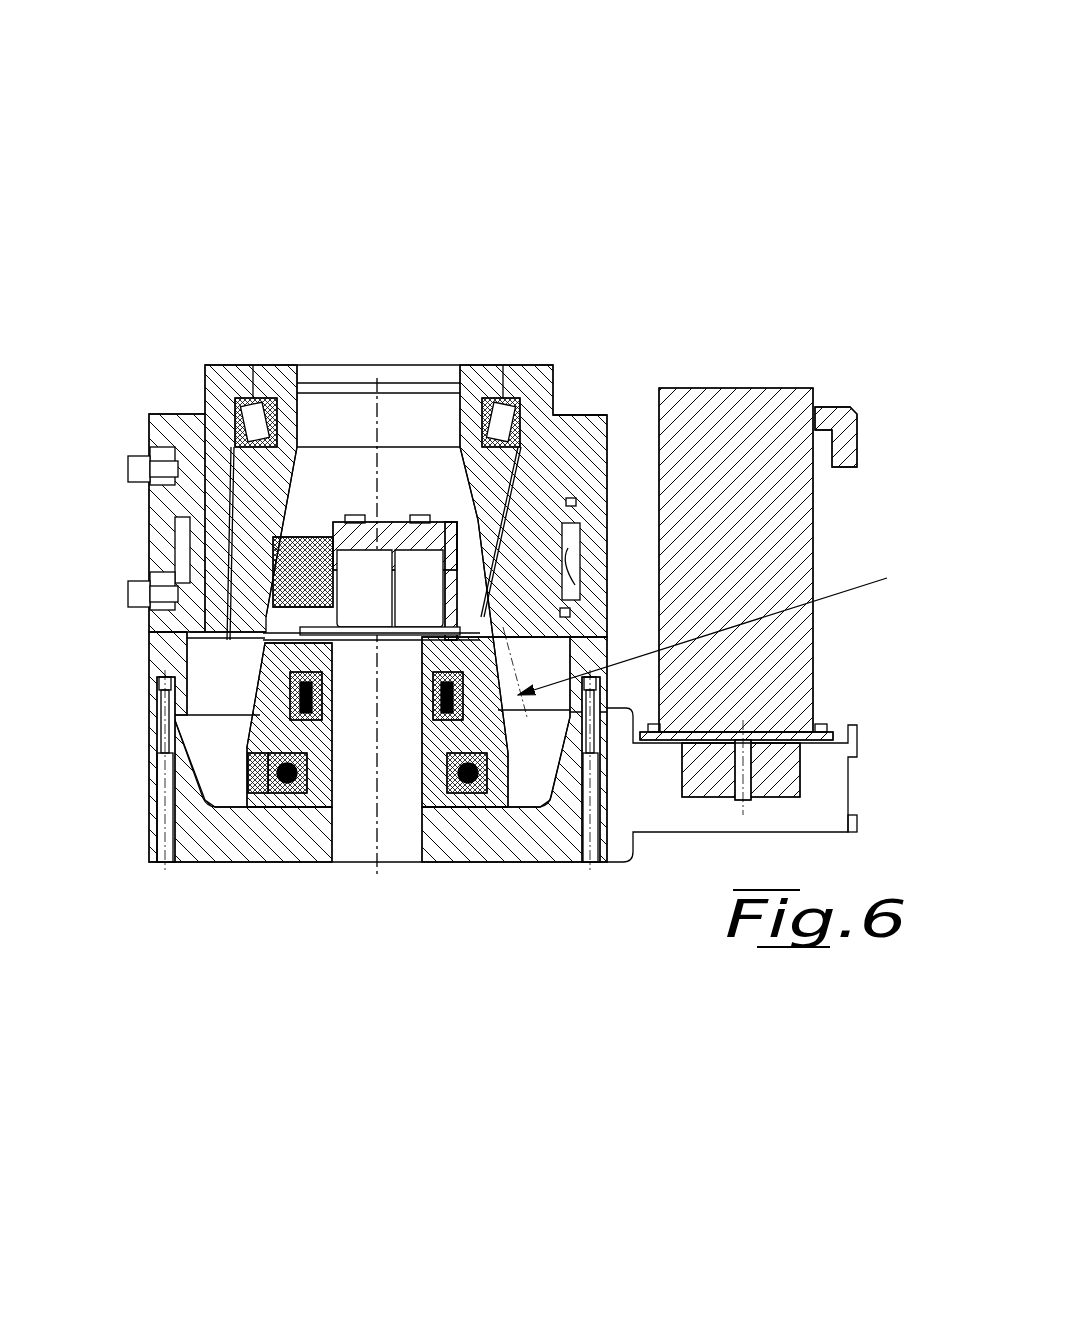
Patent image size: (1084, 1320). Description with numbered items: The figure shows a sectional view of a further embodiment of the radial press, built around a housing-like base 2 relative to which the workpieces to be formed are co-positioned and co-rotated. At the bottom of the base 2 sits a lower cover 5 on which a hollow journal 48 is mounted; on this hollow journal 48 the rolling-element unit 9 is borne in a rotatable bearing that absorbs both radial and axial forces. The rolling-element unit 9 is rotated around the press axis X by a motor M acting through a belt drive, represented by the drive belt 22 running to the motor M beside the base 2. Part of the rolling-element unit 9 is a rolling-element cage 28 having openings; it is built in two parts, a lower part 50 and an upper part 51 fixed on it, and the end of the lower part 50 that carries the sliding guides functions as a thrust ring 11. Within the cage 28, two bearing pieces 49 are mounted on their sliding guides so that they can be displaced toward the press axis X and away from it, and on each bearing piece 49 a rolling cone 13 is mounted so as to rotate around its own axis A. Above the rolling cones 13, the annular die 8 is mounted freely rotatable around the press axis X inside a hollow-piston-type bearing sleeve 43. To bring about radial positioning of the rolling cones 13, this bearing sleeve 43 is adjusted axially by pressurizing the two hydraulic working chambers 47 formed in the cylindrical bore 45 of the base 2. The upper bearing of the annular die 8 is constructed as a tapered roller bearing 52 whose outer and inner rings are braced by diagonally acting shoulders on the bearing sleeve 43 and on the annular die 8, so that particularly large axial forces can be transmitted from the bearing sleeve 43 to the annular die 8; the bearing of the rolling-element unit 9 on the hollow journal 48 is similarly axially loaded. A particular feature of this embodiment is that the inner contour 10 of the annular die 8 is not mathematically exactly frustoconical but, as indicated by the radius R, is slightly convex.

The base 2 is at (135, 517).
The lower cover 5 is at (212, 862).
The annular die 8 is at (293, 383).
The rolling-element unit 9 is at (243, 670).
The inner contour 10 is at (290, 490).
The thrust ring 11 is at (270, 633).
The rolling cone 13 is at (335, 517).
The drive belt 22 is at (658, 782).
The rolling-element cage 28 is at (470, 503).
The bearing sleeve 43 is at (560, 463).
The cylindrical bore 45 is at (187, 485).
The hydraulic working chambers 47 is at (566, 540).
The hollow journal 48 is at (440, 862).
The bearing pieces 49 is at (377, 560).
The lower part 50 is at (568, 548).
The upper part 51 is at (463, 492).
The tapered roller bearing 52 is at (253, 398).
The axis A is at (272, 571).
The motor M is at (757, 433).
The radius R is at (847, 595).
The press axis X is at (385, 862).